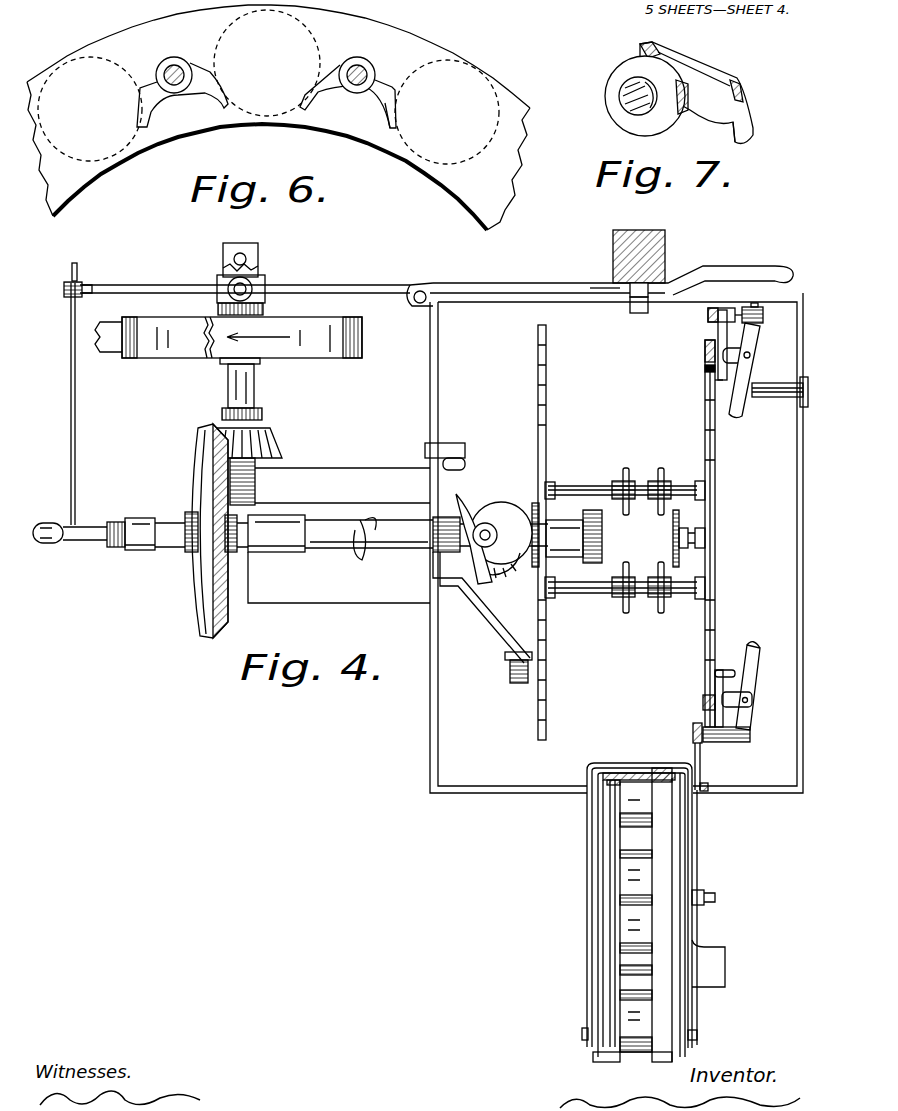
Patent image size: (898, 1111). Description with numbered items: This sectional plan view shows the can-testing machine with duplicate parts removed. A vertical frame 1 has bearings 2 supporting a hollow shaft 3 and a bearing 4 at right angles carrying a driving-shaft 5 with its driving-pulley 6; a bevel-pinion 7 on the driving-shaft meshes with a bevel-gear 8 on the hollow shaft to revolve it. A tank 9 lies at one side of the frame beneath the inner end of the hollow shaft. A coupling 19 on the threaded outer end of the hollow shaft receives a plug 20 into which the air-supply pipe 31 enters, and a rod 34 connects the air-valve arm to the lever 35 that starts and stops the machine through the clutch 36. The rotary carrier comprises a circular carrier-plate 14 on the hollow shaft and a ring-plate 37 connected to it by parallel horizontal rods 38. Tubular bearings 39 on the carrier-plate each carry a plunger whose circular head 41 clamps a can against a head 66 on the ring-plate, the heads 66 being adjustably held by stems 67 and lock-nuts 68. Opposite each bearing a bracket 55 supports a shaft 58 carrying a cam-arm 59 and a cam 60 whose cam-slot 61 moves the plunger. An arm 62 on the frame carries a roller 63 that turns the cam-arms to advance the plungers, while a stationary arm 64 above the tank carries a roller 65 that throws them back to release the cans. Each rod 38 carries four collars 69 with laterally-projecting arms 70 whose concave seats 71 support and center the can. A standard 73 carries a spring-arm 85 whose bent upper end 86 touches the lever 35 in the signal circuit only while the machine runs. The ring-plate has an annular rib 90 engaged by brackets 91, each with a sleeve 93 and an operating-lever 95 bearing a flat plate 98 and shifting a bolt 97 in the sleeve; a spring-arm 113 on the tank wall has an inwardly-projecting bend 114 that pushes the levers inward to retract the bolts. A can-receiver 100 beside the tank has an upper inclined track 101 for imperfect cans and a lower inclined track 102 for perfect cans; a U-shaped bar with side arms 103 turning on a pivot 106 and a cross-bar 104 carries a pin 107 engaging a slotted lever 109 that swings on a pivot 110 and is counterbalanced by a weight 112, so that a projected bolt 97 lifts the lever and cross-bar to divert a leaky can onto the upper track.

In FIG. 4, the vertical frame 1 is at (246, 535).
In FIG. 4, the bearings 2 is at (276, 545).
In FIG. 4, the hollow shaft 3 is at (390, 518).
In FIG. 4, the bearing 4 is at (255, 480).
In FIG. 4, the driving-shaft 5 is at (242, 384).
In FIG. 4, the driving-pulley 6 is at (228, 340).
In FIG. 4, the bevel-pinion 7 is at (262, 426).
In FIG. 4, the bevel-gear 8 is at (196, 490).
In FIG. 4, the tank 9 is at (616, 543).
In FIG. 4, the circular carrier-plate 14 is at (538, 406).
In FIG. 4, the coupling 19 is at (140, 537).
In FIG. 4, the plug 20 is at (120, 520).
In FIG. 4, the air-supply pipe 31 is at (90, 545).
In FIG. 4, the rod 34 is at (77, 425).
In FIG. 4, the lever 35 is at (185, 286).
In FIG. 4, the clutch 36 is at (265, 284).
In FIG. 6, the ring-plate 37 is at (348, 80).
In FIG. 4, the ring-plate 37 is at (714, 362).
In FIG. 6, the parallel horizontal rods 38 is at (172, 64).
In FIG. 4, the parallel horizontal rods 38 is at (574, 486).
In FIG. 4, the tubular bearings 39 is at (564, 540).
In FIG. 4, the circular head 41 is at (590, 512).
In FIG. 4, the bracket 55 is at (534, 520).
In FIG. 4, the shaft 58 is at (485, 522).
In FIG. 4, the cam-arm 59 is at (466, 518).
In FIG. 4, the cam 60 is at (501, 533).
In FIG. 4, the cam-slot 61 is at (500, 562).
In FIG. 4, the arm 62 is at (427, 466).
In FIG. 4, the roller 63 is at (453, 457).
In FIG. 4, the stationary arm 64 is at (500, 632).
In FIG. 4, the roller 65 is at (508, 678).
In FIG. 4, the heads 66 is at (673, 550).
In FIG. 4, the stems 67 is at (685, 526).
In FIG. 4, the lock-nuts 68 is at (705, 540).
In FIG. 6, the collars 69 is at (356, 90).
In FIG. 7, the collars 69 is at (606, 90).
In FIG. 4, the collars 69 is at (650, 480).
In FIG. 6, the laterally-projecting arm 70 is at (380, 88).
In FIG. 7, the laterally-projecting arm 70 is at (696, 92).
In FIG. 4, the laterally-projecting arm 70 is at (623, 470).
In FIG. 6, the concave seat 71 is at (385, 103).
In FIG. 7, the concave seat 71 is at (740, 126).
In FIG. 4, the standard 73 is at (630, 232).
In FIG. 4, the spring-arm 85 is at (615, 284).
In FIG. 4, the upper end 86 is at (637, 314).
In FIG. 4, the annular rib 90 is at (705, 352).
In FIG. 4, the brackets 91 is at (705, 368).
In FIG. 4, the tubular bearing or sleeve 93 is at (729, 744).
In FIG. 4, the operating-lever 95 is at (748, 650).
In FIG. 4, the bolt 97 is at (693, 730).
In FIG. 4, the flat plate 98 is at (755, 675).
In FIG. 4, the can-receiver 100 is at (600, 927).
In FIG. 4, the upper inclined track 101 is at (610, 857).
In FIG. 4, the lower inclined track 102 is at (615, 763).
In FIG. 4, the side arms 103 is at (590, 990).
In FIG. 4, the cross-bar 104 is at (664, 770).
In FIG. 4, the pivot 106 is at (558, 1034).
In FIG. 4, the laterally-projecting pin 107 is at (704, 792).
In FIG. 4, the lever 109 is at (697, 842).
In FIG. 4, the pivot 110 is at (715, 895).
In FIG. 4, the weight 112 is at (718, 955).
In FIG. 4, the spring-arm 113 is at (780, 383).
In FIG. 4, the inwardly-projecting bend 114 is at (756, 398).